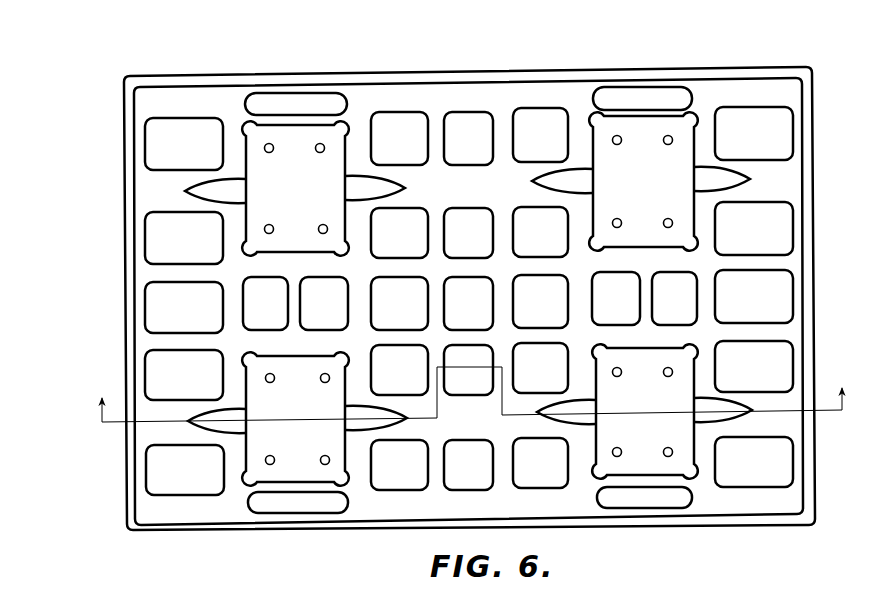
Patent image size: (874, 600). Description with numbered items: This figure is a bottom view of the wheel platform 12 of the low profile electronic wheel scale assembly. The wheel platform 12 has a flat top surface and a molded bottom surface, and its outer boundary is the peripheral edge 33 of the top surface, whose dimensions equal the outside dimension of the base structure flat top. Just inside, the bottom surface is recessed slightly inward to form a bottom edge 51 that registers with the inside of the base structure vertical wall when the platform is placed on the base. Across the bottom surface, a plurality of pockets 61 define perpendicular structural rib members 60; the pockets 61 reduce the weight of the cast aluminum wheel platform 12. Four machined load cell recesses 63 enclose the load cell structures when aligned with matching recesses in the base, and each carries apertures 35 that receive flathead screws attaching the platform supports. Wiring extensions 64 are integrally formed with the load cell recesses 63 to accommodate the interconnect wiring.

The wheel platform 12 is at (477, 60).
The peripheral edge 33 is at (121, 79).
The bottom edge 51 is at (160, 87).
The structural rib members 60 is at (473, 198).
The pockets 61 is at (548, 239).
The load cell recesses 63 is at (651, 189).
The apertures 35 is at (315, 157).
The wiring extensions 64 is at (215, 192).